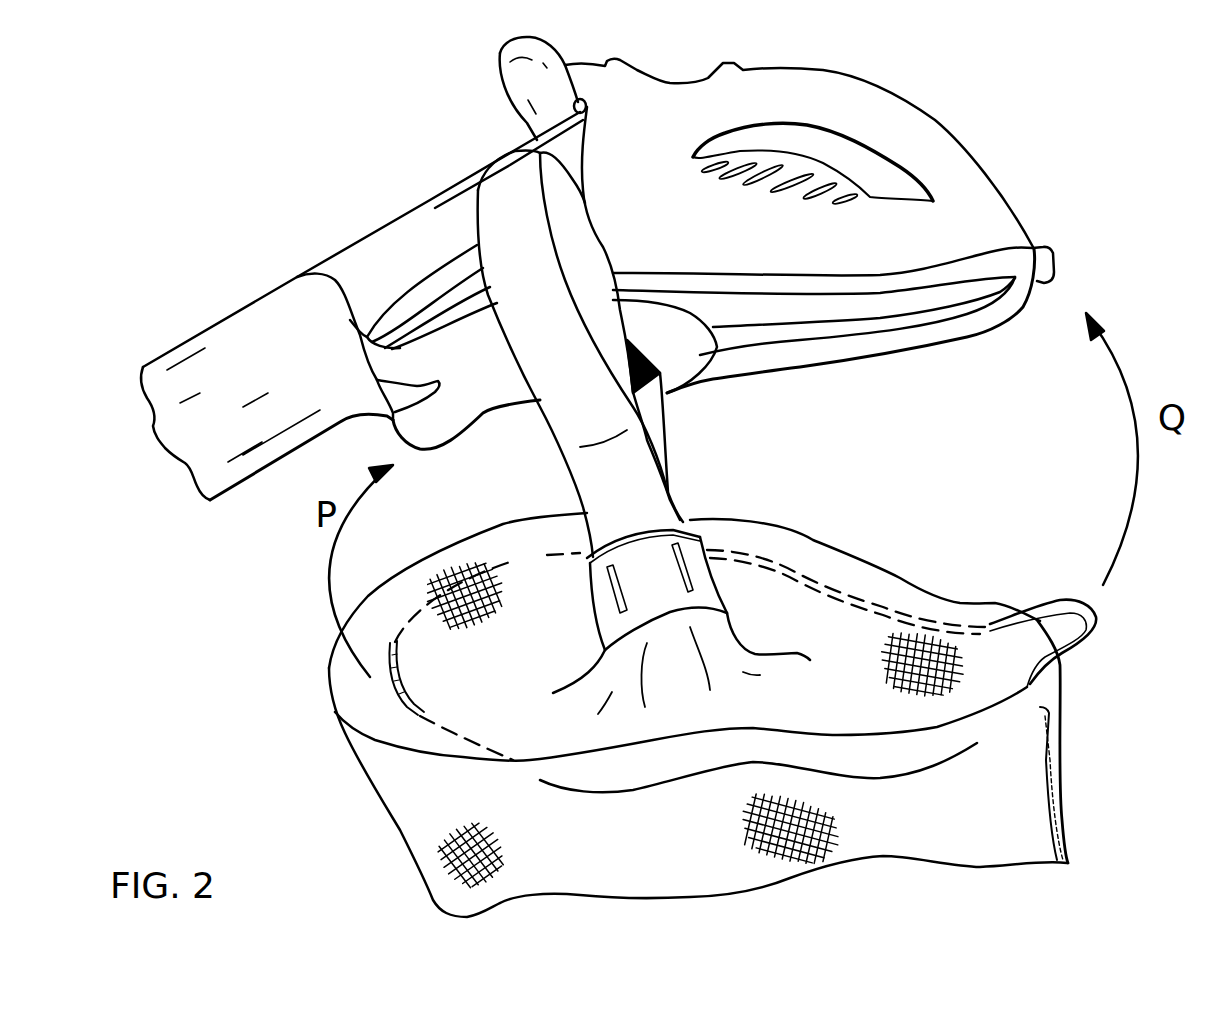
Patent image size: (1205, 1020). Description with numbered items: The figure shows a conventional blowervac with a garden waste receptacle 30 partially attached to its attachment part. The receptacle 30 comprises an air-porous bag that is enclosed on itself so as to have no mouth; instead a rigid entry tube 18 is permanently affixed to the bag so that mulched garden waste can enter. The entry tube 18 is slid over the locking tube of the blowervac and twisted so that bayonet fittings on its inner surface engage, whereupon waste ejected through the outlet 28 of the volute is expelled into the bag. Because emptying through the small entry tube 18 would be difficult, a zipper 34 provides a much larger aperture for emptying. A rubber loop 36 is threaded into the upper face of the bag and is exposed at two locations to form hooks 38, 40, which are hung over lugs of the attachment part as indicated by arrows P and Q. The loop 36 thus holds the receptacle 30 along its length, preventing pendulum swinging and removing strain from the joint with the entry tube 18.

The entry tube 18 is at (592, 593).
The outlet 28 is at (630, 477).
The garden waste receptacle 30 is at (450, 813).
The zipper 34 is at (1073, 833).
The rubber loop 36 is at (813, 578).
The hook 38 is at (393, 693).
The hook 40 is at (1100, 627).